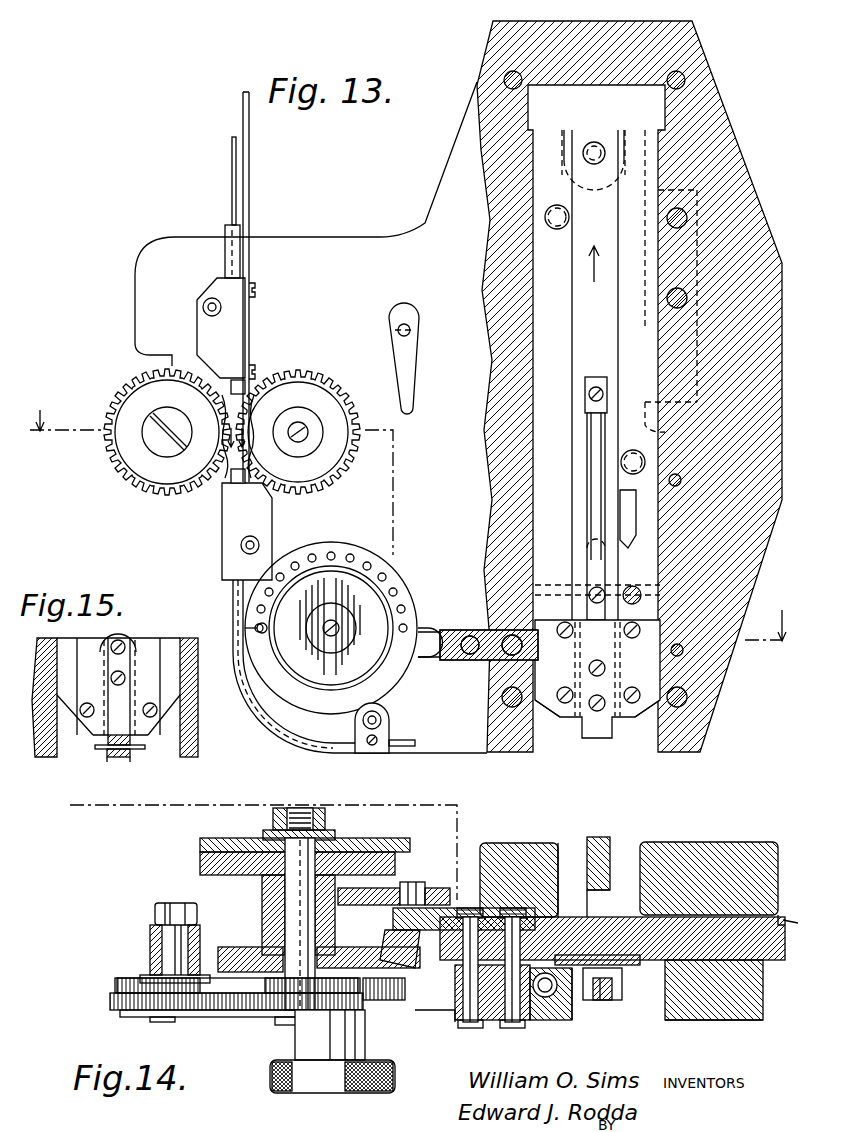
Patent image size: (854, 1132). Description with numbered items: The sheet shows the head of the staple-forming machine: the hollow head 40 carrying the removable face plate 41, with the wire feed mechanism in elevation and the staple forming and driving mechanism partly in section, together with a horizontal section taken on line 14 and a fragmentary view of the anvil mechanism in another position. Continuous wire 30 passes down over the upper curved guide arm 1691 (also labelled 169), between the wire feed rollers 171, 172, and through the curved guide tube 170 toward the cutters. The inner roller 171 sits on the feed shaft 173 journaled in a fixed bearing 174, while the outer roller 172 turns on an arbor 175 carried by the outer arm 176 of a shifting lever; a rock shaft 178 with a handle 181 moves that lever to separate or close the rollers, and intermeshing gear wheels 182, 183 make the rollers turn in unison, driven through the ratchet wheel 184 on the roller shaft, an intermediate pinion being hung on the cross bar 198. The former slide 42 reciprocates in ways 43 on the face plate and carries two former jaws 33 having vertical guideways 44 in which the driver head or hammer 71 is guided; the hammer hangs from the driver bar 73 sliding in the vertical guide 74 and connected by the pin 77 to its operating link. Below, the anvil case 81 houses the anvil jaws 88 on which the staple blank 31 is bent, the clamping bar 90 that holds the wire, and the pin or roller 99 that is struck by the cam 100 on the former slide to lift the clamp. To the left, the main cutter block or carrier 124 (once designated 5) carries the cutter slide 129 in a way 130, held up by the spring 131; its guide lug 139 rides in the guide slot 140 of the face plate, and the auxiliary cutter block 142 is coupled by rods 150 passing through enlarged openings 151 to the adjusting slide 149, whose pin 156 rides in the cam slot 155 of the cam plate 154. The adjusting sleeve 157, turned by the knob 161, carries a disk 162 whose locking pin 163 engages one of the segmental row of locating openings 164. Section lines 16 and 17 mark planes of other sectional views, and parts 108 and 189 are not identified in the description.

In FIG. 13, the main cutter block or carrier 5 is at (331, 619).
In FIG. 13, the section line 14 is at (417, 535).
In FIG. 14, the section line 16 is at (431, 868).
In FIG. 14, the section line 17 is at (431, 1020).
In FIG. 13, the wire 30 is at (226, 171).
In FIG. 14, the wire 30 is at (237, 1010).
In FIG. 15, the staple blank 31 is at (100, 749).
In FIG. 13, the former jaws 33 is at (572, 720).
In FIG. 15, the former jaws 33 is at (90, 728).
In FIG. 14, the former jaws 33 is at (563, 955).
In FIG. 14, the hollow head 40 is at (762, 842).
In FIG. 13, the face plate 41 is at (311, 417).
In FIG. 15, the face plate 41 is at (198, 743).
In FIG. 14, the face plate 41 is at (785, 958).
In FIG. 13, the former slide 42 is at (591, 375).
In FIG. 15, the former slide 42 is at (168, 641).
In FIG. 14, the former slide 42 is at (577, 915).
In FIG. 13, the ways 43 is at (483, 313).
In FIG. 15, the ways 43 is at (197, 712).
In FIG. 14, the ways 43 is at (775, 943).
In FIG. 13, the vertical guideways 44 is at (497, 652).
In FIG. 15, the vertical guideways 44 is at (118, 636).
In FIG. 14, the vertical guideways 44 is at (628, 920).
In FIG. 13, the driver head 71 is at (597, 740).
In FIG. 15, the driver head 71 is at (115, 697).
In FIG. 14, the driver head 71 is at (606, 953).
In FIG. 13, the driver bar 73 is at (594, 280).
In FIG. 14, the driver bar 73 is at (602, 935).
In FIG. 13, the vertical guide 74 is at (618, 228).
In FIG. 13, the pin 77 is at (594, 142).
In FIG. 14, the pin 77 is at (765, 990).
In FIG. 14, the anvil case 81 is at (770, 1020).
In FIG. 14, the anvil jaws 88 is at (622, 985).
In FIG. 14, the clamping bar 90 is at (600, 1000).
In FIG. 13, the pin or roller 99 is at (635, 586).
In FIG. 13, the cam 100 is at (629, 532).
In FIG. 14, the block 108 is at (599, 836).
In FIG. 14, the main cutter block 124 is at (550, 1022).
In FIG. 14, the cutter slide 129 is at (551, 1028).
In FIG. 14, the way 130 is at (560, 1020).
In FIG. 13, the spring 131 is at (312, 672).
In FIG. 14, the spring 131 is at (537, 1022).
In FIG. 13, the guide lug 139 is at (472, 633).
In FIG. 14, the guide lug 139 is at (488, 972).
In FIG. 13, the guide slot 140 is at (425, 657).
In FIG. 14, the guide slot 140 is at (419, 949).
In FIG. 14, the auxiliary cutter block 142 is at (452, 1030).
In FIG. 14, the adjusting slide 149 is at (395, 926).
In FIG. 13, the coupling rods 150 is at (505, 653).
In FIG. 14, the coupling rods 150 is at (468, 918).
In FIG. 13, the enlarged openings 151 is at (466, 637).
In FIG. 14, the enlarged openings 151 is at (462, 982).
In FIG. 14, the cam plate 154 is at (369, 887).
In FIG. 14, the cam slot 155 is at (441, 888).
In FIG. 14, the pin or roller 156 is at (413, 880).
In FIG. 14, the adjusting sleeve 157 is at (330, 1035).
In FIG. 14, the knob 161 is at (300, 1085).
In FIG. 13, the disk 162 is at (331, 700).
In FIG. 14, the disk 162 is at (384, 1000).
In FIG. 13, the locking pin 163 is at (266, 632).
In FIG. 13, the locating openings 164 is at (368, 555).
In FIG. 13, the upper curved guide arm 169 is at (306, 552).
In FIG. 13, the curved guide tube 170 is at (302, 745).
In FIG. 13, the inner wire feed roller 171 is at (244, 415).
In FIG. 14, the inner wire feed roller 171 is at (256, 1000).
In FIG. 13, the outer wire feed roller 172 is at (222, 410).
In FIG. 14, the outer wire feed roller 172 is at (115, 984).
In FIG. 14, the feed shaft 173 is at (299, 924).
In FIG. 14, the fixed bearing 174 is at (262, 936).
In FIG. 14, the arbor 175 is at (170, 946).
In FIG. 14, the outer arm of shifting lever 176 is at (155, 920).
In FIG. 13, the rock shaft 178 is at (411, 334).
In FIG. 13, the handle 181 is at (413, 384).
In FIG. 13, the gear wheel 182 is at (318, 366).
In FIG. 14, the gear wheel 182 is at (310, 1000).
In FIG. 13, the gear wheel 183 is at (124, 393).
In FIG. 14, the gear wheel 183 is at (110, 1000).
In FIG. 14, the ratchet wheel 184 is at (200, 866).
In FIG. 14, the plate 189 is at (200, 848).
In FIG. 14, the cross bar 198 is at (272, 822).
In FIG. 13, the upper curved guide arm 1691 is at (249, 171).